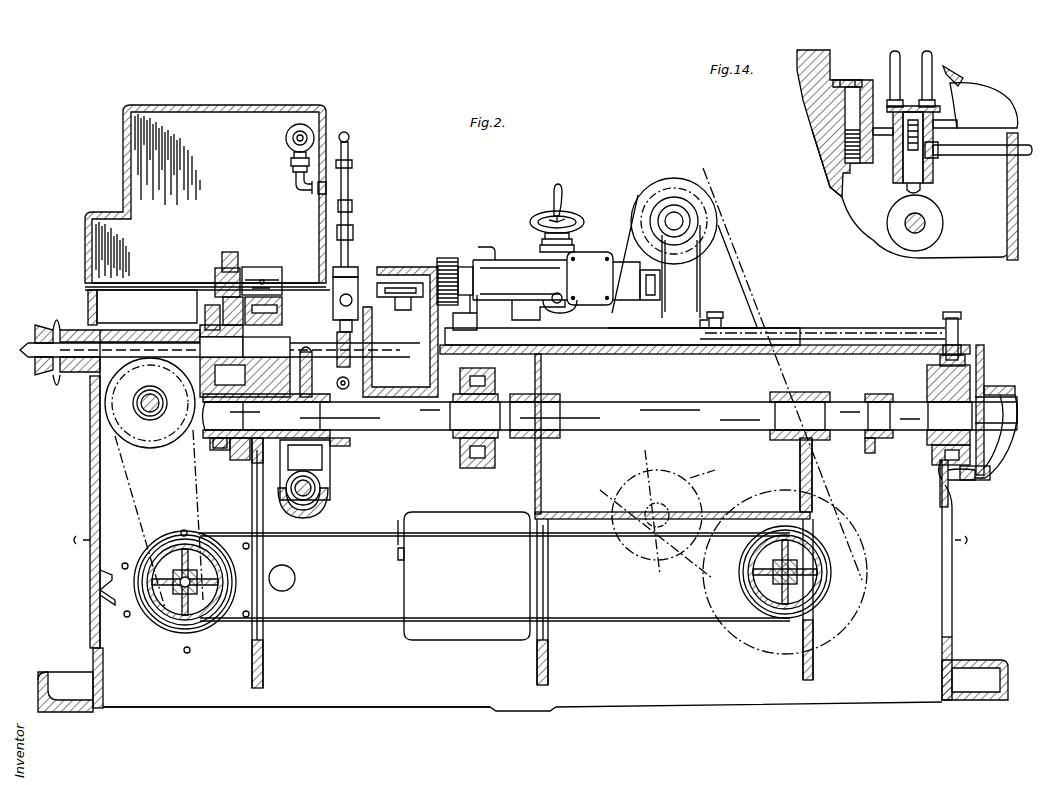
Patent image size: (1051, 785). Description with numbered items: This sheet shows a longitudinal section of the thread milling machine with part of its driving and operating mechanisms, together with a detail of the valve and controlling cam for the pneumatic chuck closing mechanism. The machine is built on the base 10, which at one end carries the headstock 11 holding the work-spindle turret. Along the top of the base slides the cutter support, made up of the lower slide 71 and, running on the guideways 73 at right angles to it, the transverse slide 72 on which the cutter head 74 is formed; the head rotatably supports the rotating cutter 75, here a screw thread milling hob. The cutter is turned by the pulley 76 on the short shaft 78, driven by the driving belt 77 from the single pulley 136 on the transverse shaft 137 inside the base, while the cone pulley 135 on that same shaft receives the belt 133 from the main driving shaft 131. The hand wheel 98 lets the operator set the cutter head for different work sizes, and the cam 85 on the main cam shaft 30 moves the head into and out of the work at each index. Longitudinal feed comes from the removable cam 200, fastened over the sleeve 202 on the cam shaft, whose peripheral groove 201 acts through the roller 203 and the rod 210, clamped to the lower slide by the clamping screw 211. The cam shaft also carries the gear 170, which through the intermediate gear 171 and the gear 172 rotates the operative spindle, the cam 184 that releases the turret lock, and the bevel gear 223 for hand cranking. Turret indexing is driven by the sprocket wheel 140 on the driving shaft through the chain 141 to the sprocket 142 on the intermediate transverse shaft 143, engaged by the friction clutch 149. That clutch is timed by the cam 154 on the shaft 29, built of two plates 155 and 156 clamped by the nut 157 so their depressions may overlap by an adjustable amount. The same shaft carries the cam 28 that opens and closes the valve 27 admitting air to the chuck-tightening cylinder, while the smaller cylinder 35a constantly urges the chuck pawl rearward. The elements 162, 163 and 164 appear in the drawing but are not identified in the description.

In FIG. 2, the base 10 is at (607, 697).
In FIG. 14, the base 10 is at (828, 185).
In FIG. 2, the headstock 11 is at (97, 215).
In FIG. 14, the headstock 11 is at (832, 65).
In FIG. 14, the valve 27 is at (892, 175).
In FIG. 2, the cam 28 is at (345, 328).
In FIG. 14, the cam 28 is at (935, 205).
In FIG. 2, the shaft 29 is at (210, 360).
In FIG. 14, the shaft 29 is at (906, 226).
In FIG. 2, the main cam shaft 30 is at (398, 430).
In FIG. 2, the smaller cylinder 35a is at (286, 140).
In FIG. 2, the slide 71 is at (528, 300).
In FIG. 2, the slide 72 is at (460, 310).
In FIG. 2, the guideways 73 is at (505, 300).
In FIG. 2, the cutter head 74 is at (582, 252).
In FIG. 2, the rotating cutter 75 is at (448, 258).
In FIG. 2, the pulley 76 is at (695, 195).
In FIG. 2, the driving belt 77 is at (745, 300).
In FIG. 2, the short shaft 78 is at (668, 218).
In FIG. 2, the cam 85 is at (476, 466).
In FIG. 2, the hand wheel 98 is at (566, 207).
In FIG. 2, the main driving shaft 131 is at (200, 608).
In FIG. 2, the belt 133 is at (338, 618).
In FIG. 2, the cone pulley 135 is at (780, 612).
In FIG. 2, the single pulley 136 is at (855, 597).
In FIG. 2, the transverse shaft 137 is at (765, 580).
In FIG. 2, the sprocket wheel 140 is at (170, 605).
In FIG. 2, the chain 141 is at (140, 528).
In FIG. 2, the sprocket 142 is at (155, 440).
In FIG. 2, the intermediate transverse shaft 143 is at (145, 408).
In FIG. 2, the friction clutch 149 is at (132, 440).
In FIG. 2, the cam 154 is at (205, 325).
In FIG. 2, the plate 155 is at (215, 300).
In FIG. 2, the plate 156 is at (205, 312).
In FIG. 2, the nut 157 is at (30, 343).
In FIG. 2, the gear 162 is at (322, 500).
In FIG. 2, the bracket 163 is at (305, 458).
In FIG. 2, the bearing cap 164 is at (343, 448).
In FIG. 2, the gear 170 is at (242, 462).
In FIG. 2, the intermediate gear 171 is at (265, 312).
In FIG. 2, the gear 172 is at (238, 260).
In FIG. 2, the cam 184 is at (222, 452).
In FIG. 2, the cam 200 is at (933, 470).
In FIG. 2, the peripheral groove 201 is at (968, 470).
In FIG. 2, the sleeve 202 is at (926, 443).
In FIG. 2, the roller 203 is at (962, 345).
In FIG. 2, the rod 210 is at (792, 328).
In FIG. 2, the clamping screw 211 is at (712, 313).
In FIG. 2, the bevel gear 223 is at (866, 450).